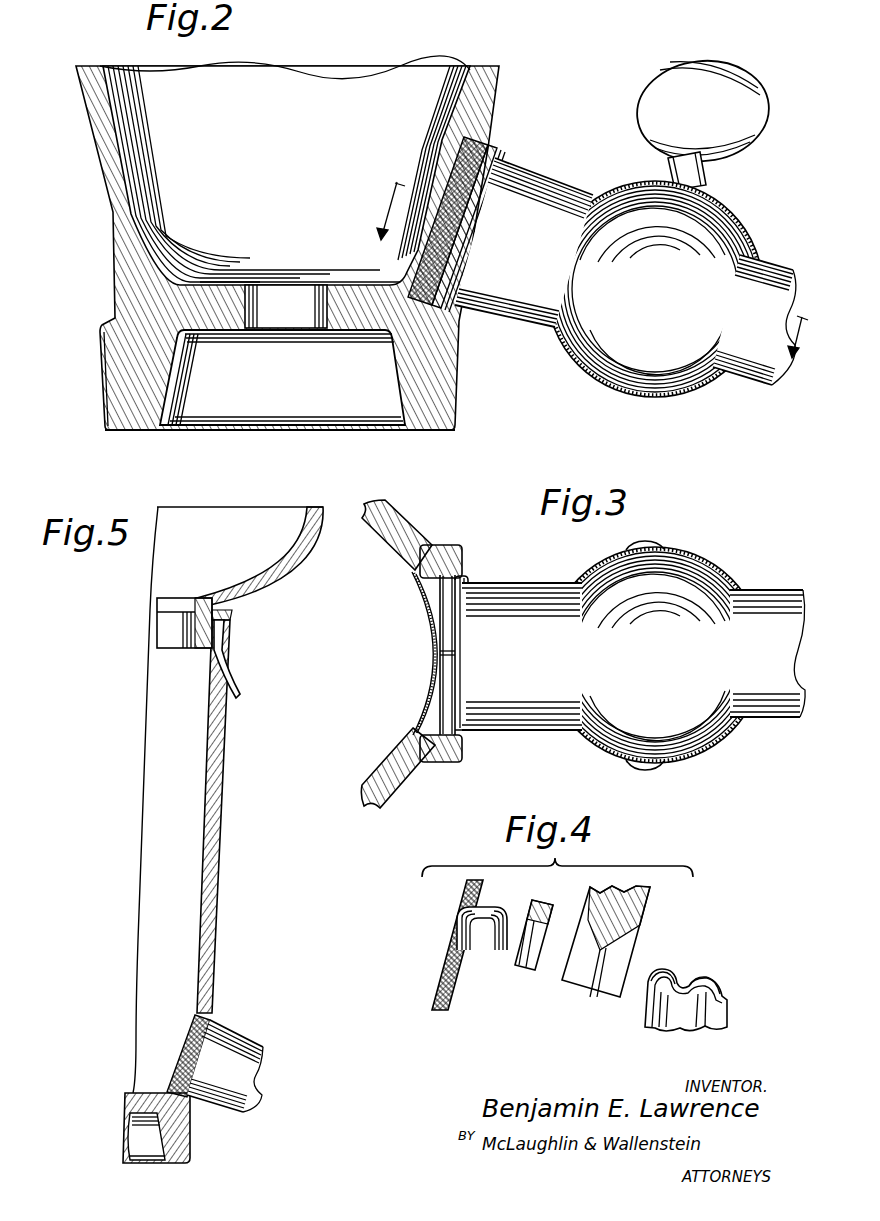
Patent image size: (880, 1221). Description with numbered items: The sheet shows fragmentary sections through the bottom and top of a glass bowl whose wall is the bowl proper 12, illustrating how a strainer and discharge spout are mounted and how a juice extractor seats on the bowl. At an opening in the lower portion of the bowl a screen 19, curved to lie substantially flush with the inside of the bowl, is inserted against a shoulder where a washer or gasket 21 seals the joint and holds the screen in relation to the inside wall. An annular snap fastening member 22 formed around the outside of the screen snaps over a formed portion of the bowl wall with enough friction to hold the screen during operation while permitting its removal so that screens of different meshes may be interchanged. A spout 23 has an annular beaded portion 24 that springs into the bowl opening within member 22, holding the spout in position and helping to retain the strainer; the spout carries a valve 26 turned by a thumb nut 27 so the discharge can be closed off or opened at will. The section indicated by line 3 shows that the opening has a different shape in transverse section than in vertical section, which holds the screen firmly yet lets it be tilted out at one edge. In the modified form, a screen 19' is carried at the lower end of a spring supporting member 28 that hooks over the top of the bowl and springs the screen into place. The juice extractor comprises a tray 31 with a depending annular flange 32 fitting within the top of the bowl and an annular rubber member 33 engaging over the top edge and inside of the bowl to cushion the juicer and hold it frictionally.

In FIG. 2, the section line 3 is at (579, 281).
In FIG. 2, the water closet bowl wall 12 is at (100, 214).
In FIG. 3, the water closet bowl wall 12 is at (399, 654).
In FIG. 4, the water closet bowl wall 12 is at (648, 912).
In FIG. 5, the water closet bowl wall 12 is at (216, 857).
In FIG. 2, the screen 19 is at (428, 214).
In FIG. 3, the screen 19 is at (406, 655).
In FIG. 4, the screen 19 is at (433, 945).
In FIG. 5, the screen 19' is at (141, 1056).
In FIG. 3, the washer or gasket 21 is at (432, 546).
In FIG. 4, the washer or gasket 21 is at (552, 925).
In FIG. 2, the annular snap fastening member 22 is at (486, 150).
In FIG. 3, the annular snap fastening member 22 is at (426, 763).
In FIG. 4, the annular snap fastening member 22 is at (482, 944).
In FIG. 2, the spout 23 is at (568, 192).
In FIG. 3, the spout 23 is at (778, 718).
In FIG. 4, the spout 23 is at (725, 1002).
In FIG. 5, the spout 23 is at (250, 1040).
In FIG. 3, the annular beaded portion 24 is at (440, 592).
In FIG. 4, the annular beaded portion 24 is at (665, 975).
In FIG. 2, the valve 26 is at (580, 350).
In FIG. 3, the valve 26 is at (700, 582).
In FIG. 2, the thumb nut 27 is at (676, 66).
In FIG. 5, the spring supporting member 28 is at (210, 728).
In FIG. 5, the tray 31 is at (292, 572).
In FIG. 5, the depending annular flange 32 is at (185, 632).
In FIG. 5, the annular rubber member 33 is at (228, 614).